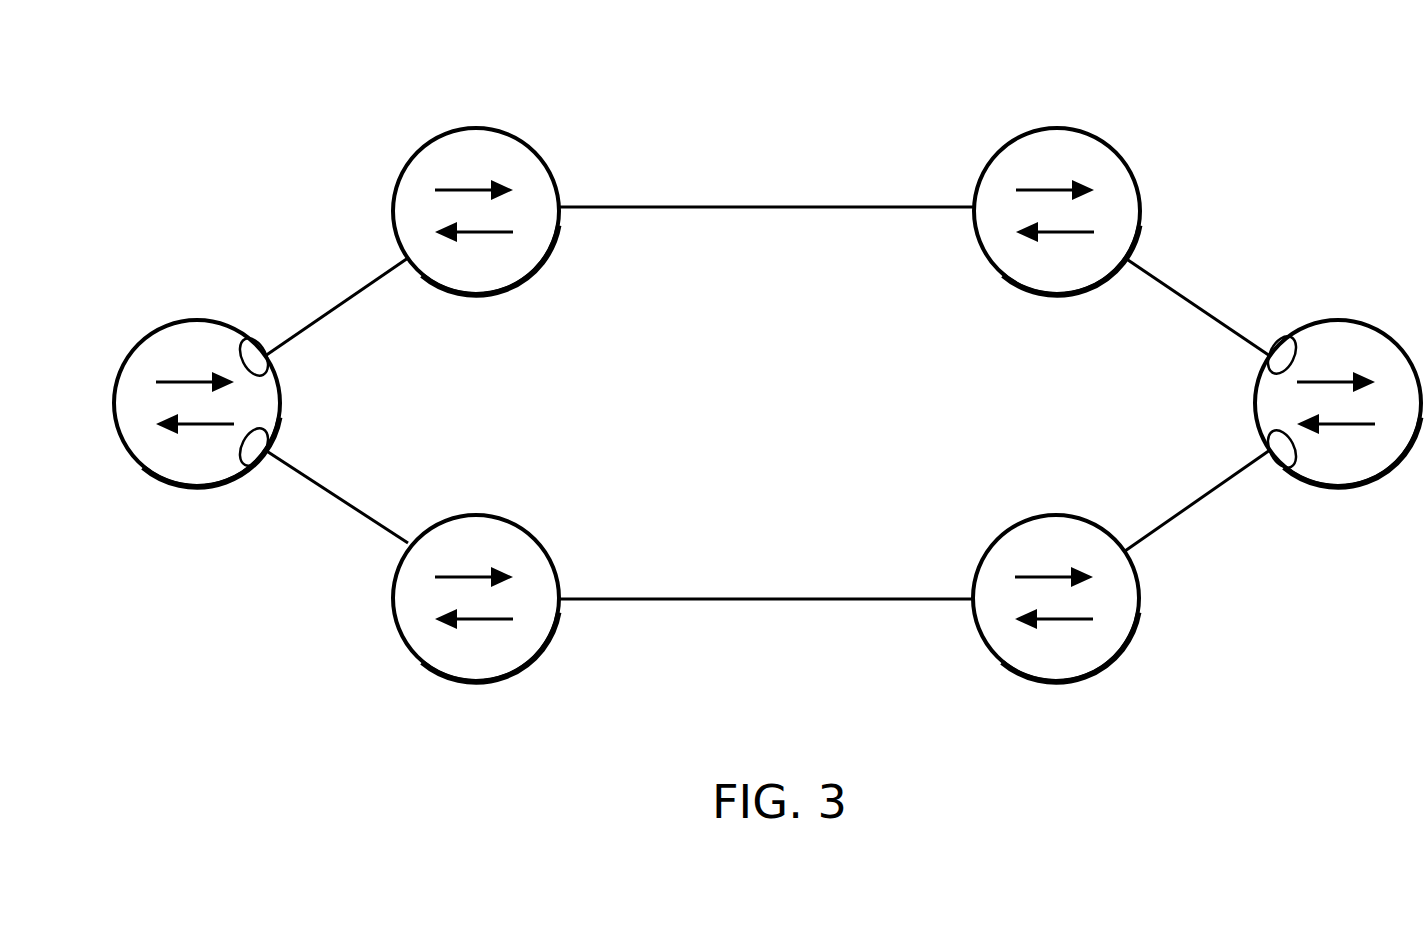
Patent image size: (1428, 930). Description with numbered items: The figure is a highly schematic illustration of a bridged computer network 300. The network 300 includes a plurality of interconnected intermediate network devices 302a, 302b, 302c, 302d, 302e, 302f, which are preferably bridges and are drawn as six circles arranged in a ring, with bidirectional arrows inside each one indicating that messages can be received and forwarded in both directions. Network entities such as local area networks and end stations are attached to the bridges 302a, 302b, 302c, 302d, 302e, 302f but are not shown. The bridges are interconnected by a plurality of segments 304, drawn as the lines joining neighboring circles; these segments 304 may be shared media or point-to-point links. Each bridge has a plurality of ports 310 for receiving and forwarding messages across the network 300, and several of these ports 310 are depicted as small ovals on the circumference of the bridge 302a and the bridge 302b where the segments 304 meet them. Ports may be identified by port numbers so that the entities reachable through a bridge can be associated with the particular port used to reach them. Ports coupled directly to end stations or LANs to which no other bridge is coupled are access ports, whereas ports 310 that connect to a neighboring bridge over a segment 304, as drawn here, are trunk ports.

The computer network 300 is at (1198, 66).
The intermediate network device 302a is at (195, 319).
The intermediate network device 302b is at (1339, 319).
The intermediate network device 302c is at (474, 128).
The intermediate network device 302d is at (474, 683).
The intermediate network device 302e is at (1054, 683).
The intermediate network device 302f is at (1055, 128).
The segment 304 is at (715, 208).
The port 310 is at (246, 339).